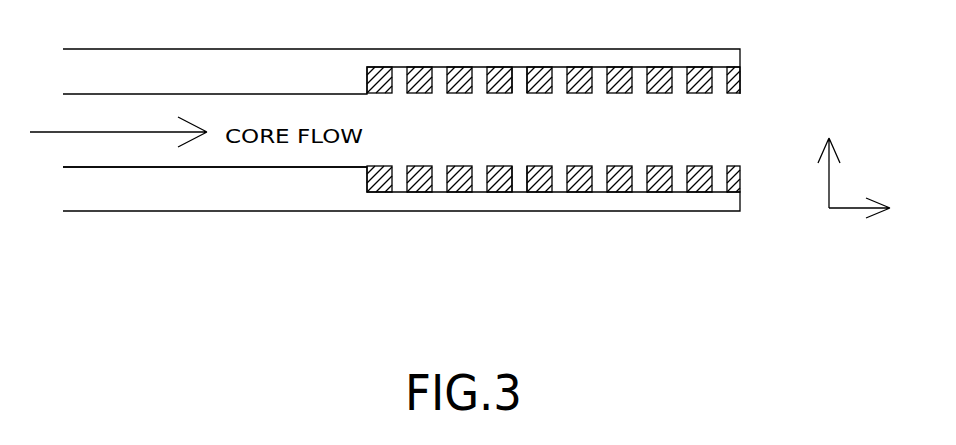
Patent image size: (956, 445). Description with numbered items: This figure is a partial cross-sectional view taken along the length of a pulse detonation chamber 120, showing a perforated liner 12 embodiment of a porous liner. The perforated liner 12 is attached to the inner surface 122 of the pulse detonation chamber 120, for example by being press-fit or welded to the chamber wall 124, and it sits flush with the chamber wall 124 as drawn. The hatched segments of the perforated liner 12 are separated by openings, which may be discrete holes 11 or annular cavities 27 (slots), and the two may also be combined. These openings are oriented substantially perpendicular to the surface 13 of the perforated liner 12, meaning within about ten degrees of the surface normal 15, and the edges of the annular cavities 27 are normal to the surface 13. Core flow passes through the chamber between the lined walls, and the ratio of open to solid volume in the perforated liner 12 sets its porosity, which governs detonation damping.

The perforated liner 12 is at (596, 179).
The holes 11 is at (553, 179).
The annular cavities 27 is at (640, 180).
The pulse detonation chamber 120 is at (168, 237).
The chamber wall 124 is at (202, 186).
The inner surface 122 is at (530, 193).
The surface normal 15 is at (830, 161).
The surface 13 is at (873, 208).